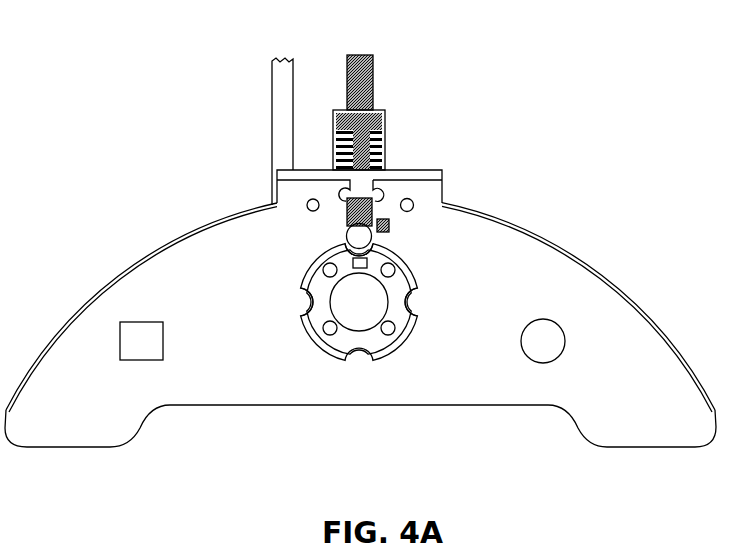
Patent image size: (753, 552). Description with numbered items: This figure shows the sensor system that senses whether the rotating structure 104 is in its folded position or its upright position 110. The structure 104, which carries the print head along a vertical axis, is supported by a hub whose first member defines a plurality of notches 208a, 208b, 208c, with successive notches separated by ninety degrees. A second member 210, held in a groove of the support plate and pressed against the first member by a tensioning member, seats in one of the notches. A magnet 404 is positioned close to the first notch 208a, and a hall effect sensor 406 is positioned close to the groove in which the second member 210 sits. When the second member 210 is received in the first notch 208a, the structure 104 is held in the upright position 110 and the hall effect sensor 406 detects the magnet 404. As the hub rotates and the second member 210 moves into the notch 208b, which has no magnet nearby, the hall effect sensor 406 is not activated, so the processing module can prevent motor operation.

The structure 104 is at (410, 33).
The upright position 110 is at (219, 84).
The first notch 208a is at (195, 448).
The notch 208b is at (138, 229).
The notch 208c is at (560, 209).
The second member 210 is at (485, 434).
The magnet 404 is at (512, 186).
The hall effect sensor 406 is at (470, 130).